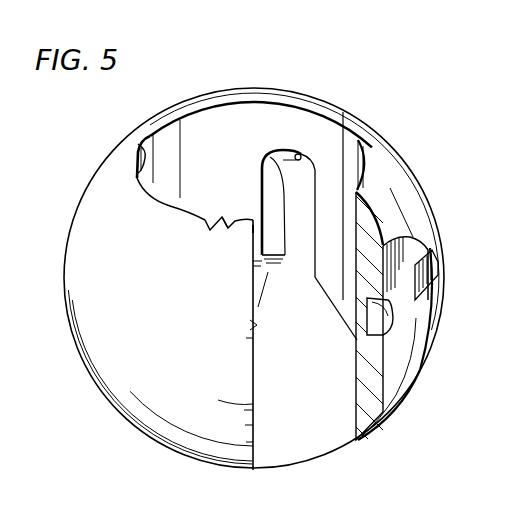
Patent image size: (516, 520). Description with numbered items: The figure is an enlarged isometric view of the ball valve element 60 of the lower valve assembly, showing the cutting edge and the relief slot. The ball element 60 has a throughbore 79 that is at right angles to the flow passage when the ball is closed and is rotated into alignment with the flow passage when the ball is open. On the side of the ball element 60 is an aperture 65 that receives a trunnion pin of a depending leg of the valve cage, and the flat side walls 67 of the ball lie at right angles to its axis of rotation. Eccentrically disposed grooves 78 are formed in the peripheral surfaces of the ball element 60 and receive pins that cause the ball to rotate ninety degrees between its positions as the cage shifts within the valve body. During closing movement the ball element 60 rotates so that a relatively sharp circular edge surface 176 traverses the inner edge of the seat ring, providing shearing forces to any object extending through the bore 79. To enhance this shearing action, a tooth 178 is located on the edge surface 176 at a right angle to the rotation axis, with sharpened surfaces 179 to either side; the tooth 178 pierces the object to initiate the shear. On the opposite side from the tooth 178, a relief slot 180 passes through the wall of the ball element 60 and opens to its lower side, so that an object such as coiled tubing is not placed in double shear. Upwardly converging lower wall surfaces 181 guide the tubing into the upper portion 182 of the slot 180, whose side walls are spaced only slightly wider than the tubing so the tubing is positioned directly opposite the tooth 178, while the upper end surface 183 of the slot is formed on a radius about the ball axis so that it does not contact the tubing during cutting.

The ball valve element 60 is at (398, 148).
The aperture 65 is at (396, 321).
The flat side walls 67 is at (410, 352).
The eccentrically disposed grooves 78 is at (428, 259).
The throughbore 79 is at (357, 412).
The circular edge surface 176 is at (136, 150).
The tooth 178 is at (207, 222).
The sharpened surfaces 179 is at (241, 220).
The relief slot 180 is at (298, 178).
The upwardly converging lower wall surfaces 181 is at (266, 272).
The upper portion of the slot 182 is at (313, 217).
The upper end surface of the slot 183 is at (300, 154).